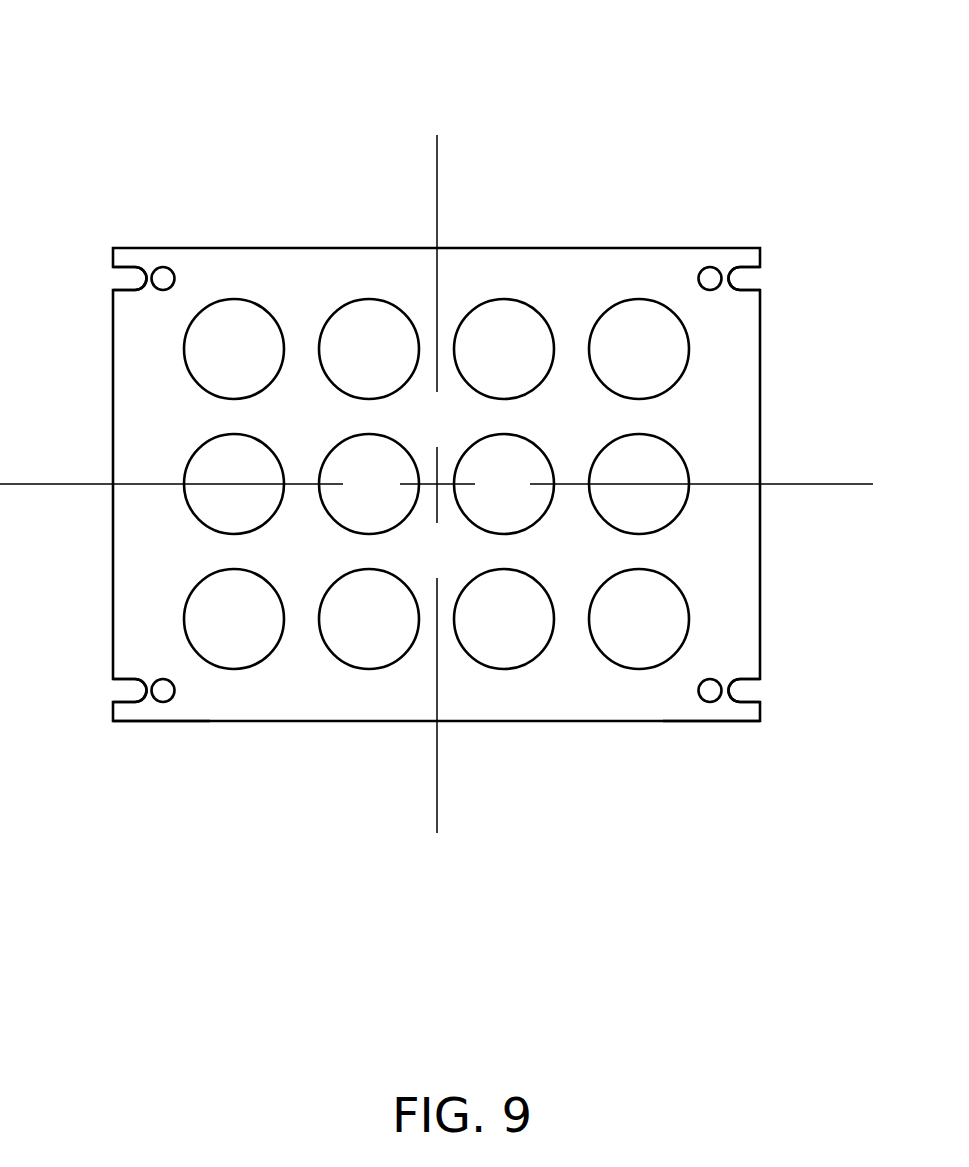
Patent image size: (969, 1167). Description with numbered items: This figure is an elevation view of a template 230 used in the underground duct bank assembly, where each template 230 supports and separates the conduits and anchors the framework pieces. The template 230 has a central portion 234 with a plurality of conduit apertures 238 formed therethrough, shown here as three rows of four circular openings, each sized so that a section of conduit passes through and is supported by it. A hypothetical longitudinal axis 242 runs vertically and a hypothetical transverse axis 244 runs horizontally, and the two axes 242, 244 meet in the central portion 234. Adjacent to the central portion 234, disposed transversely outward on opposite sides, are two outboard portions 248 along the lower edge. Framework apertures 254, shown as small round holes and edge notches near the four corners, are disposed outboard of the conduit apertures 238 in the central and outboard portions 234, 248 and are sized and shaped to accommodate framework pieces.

The central portion 234 is at (436, 410).
The template 230 is at (528, 247).
The conduit apertures 238 is at (351, 301).
The longitudinal axis 242 is at (437, 215).
The transverse axis 244 is at (807, 484).
The outboard portion 248 is at (202, 737).
The framework apertures 254 is at (127, 257).